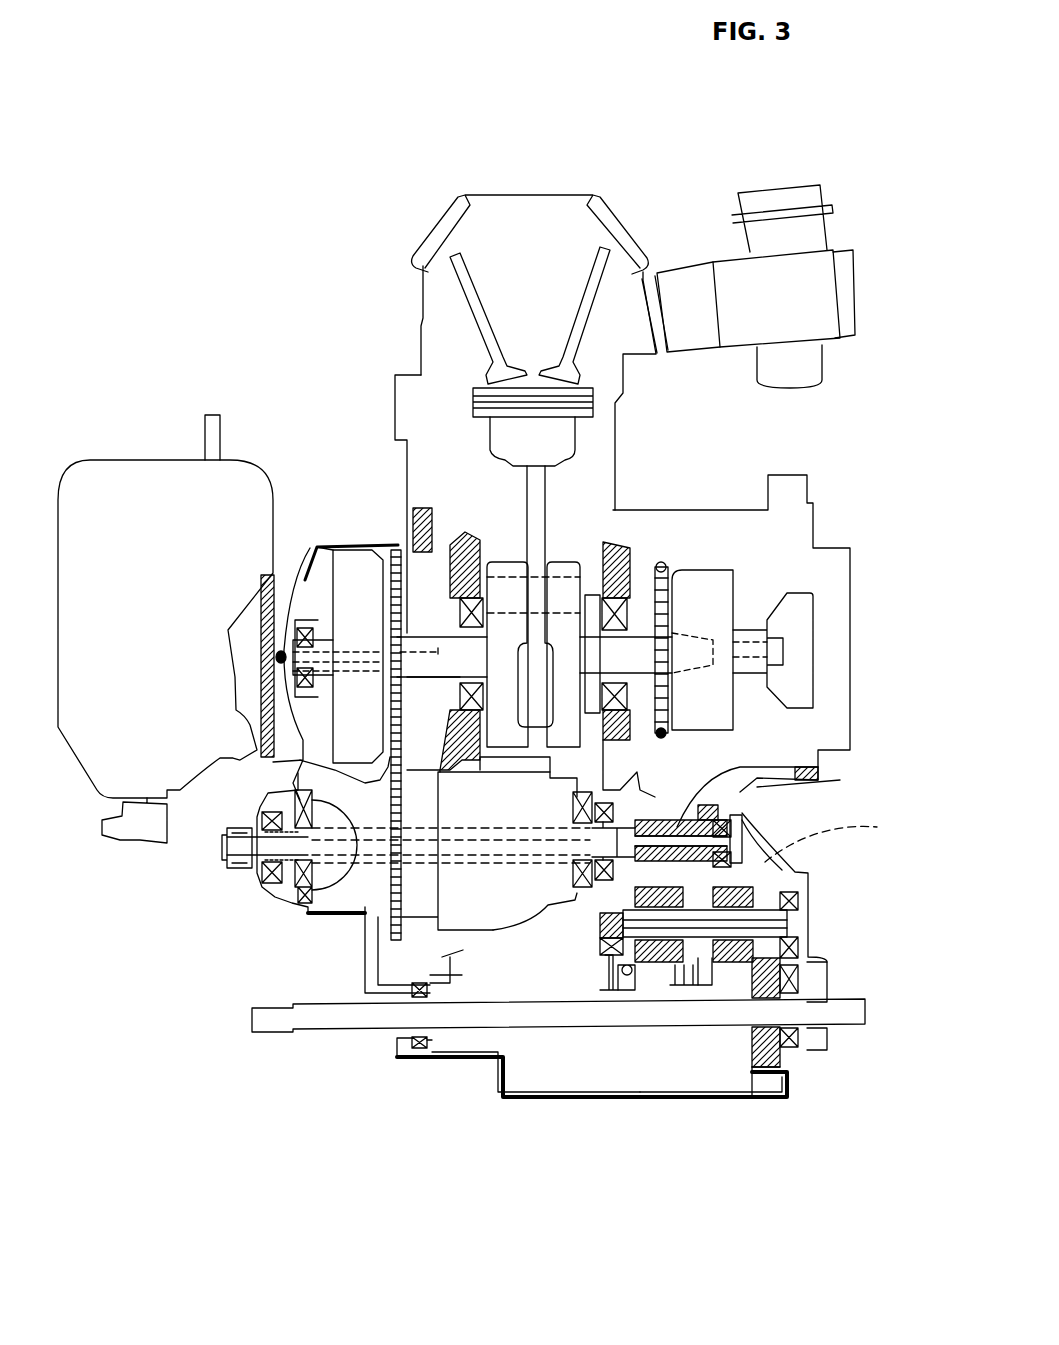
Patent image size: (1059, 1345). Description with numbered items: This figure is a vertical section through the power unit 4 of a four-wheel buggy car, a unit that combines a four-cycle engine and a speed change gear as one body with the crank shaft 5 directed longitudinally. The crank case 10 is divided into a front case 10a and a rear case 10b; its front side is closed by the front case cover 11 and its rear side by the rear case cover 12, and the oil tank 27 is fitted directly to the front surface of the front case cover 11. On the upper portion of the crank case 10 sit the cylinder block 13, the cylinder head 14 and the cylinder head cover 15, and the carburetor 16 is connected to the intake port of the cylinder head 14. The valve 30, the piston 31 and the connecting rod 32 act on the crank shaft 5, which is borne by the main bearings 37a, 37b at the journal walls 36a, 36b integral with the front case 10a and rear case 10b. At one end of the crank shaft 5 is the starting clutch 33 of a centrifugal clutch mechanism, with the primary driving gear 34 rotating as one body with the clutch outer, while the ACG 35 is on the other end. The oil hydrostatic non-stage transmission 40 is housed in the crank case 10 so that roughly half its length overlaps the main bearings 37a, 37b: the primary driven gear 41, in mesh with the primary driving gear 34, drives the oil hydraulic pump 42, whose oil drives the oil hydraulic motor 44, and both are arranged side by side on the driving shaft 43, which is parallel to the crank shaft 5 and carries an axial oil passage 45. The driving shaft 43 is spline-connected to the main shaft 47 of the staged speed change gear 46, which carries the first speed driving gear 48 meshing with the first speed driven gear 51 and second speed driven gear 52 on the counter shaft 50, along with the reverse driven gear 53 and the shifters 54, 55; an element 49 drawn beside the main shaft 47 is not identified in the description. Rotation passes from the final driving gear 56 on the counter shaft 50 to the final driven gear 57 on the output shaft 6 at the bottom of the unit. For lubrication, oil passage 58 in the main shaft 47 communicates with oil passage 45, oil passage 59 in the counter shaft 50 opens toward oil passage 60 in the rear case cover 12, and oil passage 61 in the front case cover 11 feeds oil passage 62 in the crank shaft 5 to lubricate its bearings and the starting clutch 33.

The power unit 4 is at (313, 348).
The crank shaft 5 is at (418, 632).
The output shaft 6 is at (320, 1030).
The crank case 10 is at (717, 1173).
The front case 10a is at (580, 1103).
The rear case 10b is at (690, 1103).
The front case cover 11 is at (284, 637).
The rear case cover 12 is at (780, 1097).
The cylinder block 13 is at (400, 448).
The cylinder head 14 is at (423, 316).
The cylinder head cover 15 is at (526, 226).
The carburetor 16 is at (808, 282).
The oil tank 27 is at (105, 442).
The valve 30 is at (551, 297).
The piston 31 is at (470, 397).
The connecting rod 32 is at (540, 497).
The starting clutch 33 is at (361, 556).
The primary driving gear 34 is at (395, 540).
The ACG 35 is at (712, 580).
The journal wall 36a is at (473, 560).
The journal wall 36b is at (620, 550).
The main bearing 37a is at (458, 696).
The main bearing 37b is at (640, 736).
The oil hydrostatic non-stage transmission 40 is at (543, 938).
The primary driven gear 41 is at (372, 955).
The oil hydraulic pump 42 is at (300, 920).
The driving shaft 43 is at (270, 905).
The oil hydraulic motor 44 is at (490, 908).
The oil passage 45 is at (268, 810).
The staged speed change gear 46 is at (755, 865).
The main shaft 47 is at (735, 790).
The first speed driving gear 48 is at (636, 818).
The bracket 49 is at (795, 768).
The counter shaft 50 is at (600, 925).
The first speed driven gear 51 is at (618, 1000).
The second speed driven gear 52 is at (706, 1005).
The reverse driven gear 53 is at (668, 992).
The shifter 54 is at (632, 1005).
The shifter 55 is at (748, 1020).
The final driving gear 56 is at (790, 876).
The final driven gear 57 is at (752, 1097).
The oil passage 58 is at (662, 830).
The oil passage 59 is at (810, 915).
The oil passage 60 is at (855, 850).
The oil passage 61 is at (276, 657).
The oil passage 62 is at (360, 657).